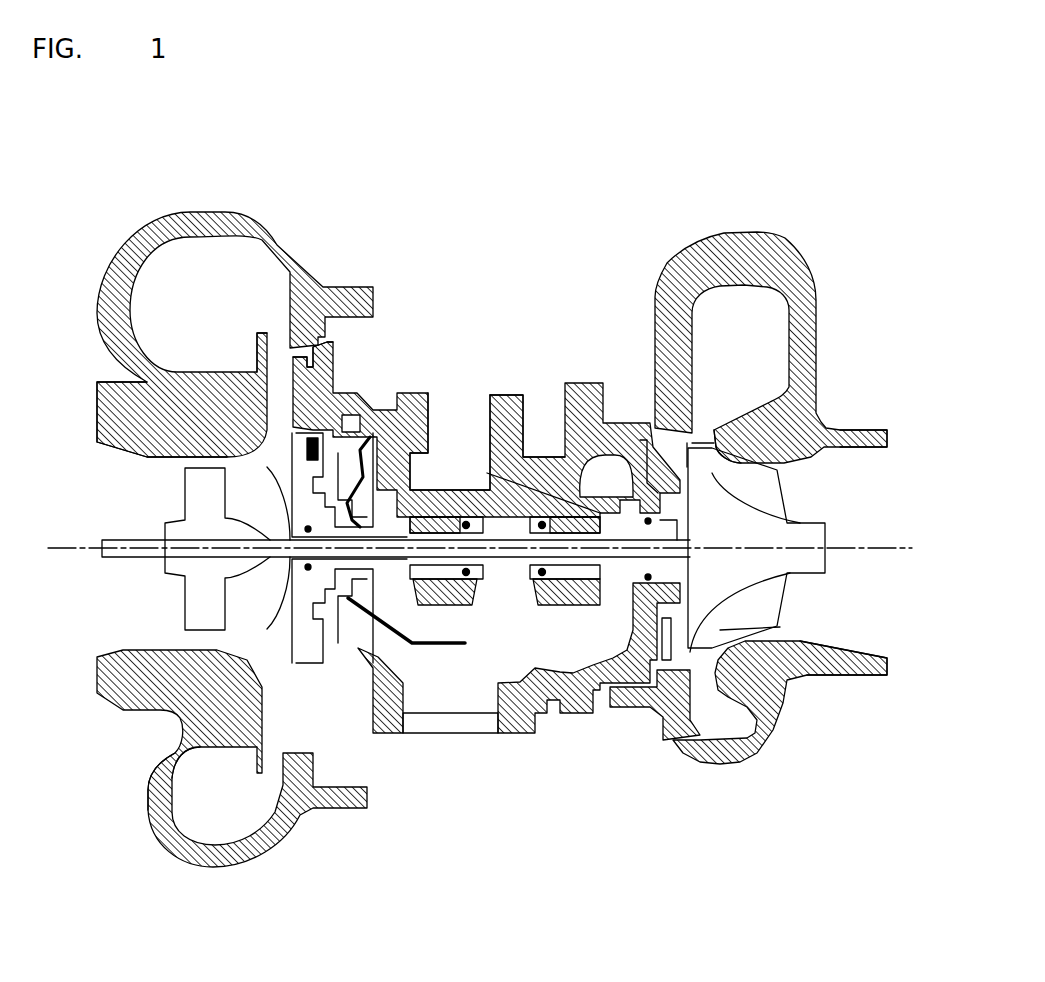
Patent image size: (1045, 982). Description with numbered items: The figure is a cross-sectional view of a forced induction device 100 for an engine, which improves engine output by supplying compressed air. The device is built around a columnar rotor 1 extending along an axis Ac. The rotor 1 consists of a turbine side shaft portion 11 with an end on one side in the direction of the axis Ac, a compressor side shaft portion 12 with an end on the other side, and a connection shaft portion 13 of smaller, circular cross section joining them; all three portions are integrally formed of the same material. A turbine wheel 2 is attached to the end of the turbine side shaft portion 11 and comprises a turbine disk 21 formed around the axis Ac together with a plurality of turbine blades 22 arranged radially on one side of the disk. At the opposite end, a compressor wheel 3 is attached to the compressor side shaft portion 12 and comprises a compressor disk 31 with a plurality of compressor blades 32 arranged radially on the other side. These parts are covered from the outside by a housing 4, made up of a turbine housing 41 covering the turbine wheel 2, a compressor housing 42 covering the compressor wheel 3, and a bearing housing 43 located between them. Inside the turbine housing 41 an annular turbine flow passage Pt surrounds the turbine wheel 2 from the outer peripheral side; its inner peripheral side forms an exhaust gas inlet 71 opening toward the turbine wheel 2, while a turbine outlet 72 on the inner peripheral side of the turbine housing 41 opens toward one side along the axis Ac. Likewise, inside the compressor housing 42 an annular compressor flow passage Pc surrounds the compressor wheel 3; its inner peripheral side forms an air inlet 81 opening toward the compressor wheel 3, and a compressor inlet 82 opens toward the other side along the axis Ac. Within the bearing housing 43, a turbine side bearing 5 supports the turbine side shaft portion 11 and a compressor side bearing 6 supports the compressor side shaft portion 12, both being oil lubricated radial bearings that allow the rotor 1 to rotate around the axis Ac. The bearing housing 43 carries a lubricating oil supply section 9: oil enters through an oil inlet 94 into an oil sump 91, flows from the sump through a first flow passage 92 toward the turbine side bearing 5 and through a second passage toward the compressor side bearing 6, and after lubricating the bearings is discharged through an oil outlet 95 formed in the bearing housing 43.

The forced induction device 100 is at (805, 162).
The rotor 1 is at (92, 605).
The turbine wheel 2 is at (117, 707).
The turbine disk 21 is at (253, 717).
The turbine blades 22 is at (190, 775).
The compressor wheel 3 is at (840, 600).
The compressor disk 31 is at (707, 620).
The compressor blades 32 is at (797, 680).
The housing 4 is at (600, 238).
The turbine housing 41 is at (150, 222).
The compressor housing 42 is at (733, 232).
The bearing housing 43 is at (503, 430).
The turbine side bearing 5 is at (457, 607).
The compressor side bearing 6 is at (640, 713).
The exhaust gas inlet 71 is at (262, 333).
The turbine outlet 72 is at (122, 447).
The air inlet 81 is at (703, 427).
The compressor inlet 82 is at (853, 467).
The lubricating oil supply section 9 is at (438, 238).
The oil sump 91 is at (462, 430).
The first flow passage 92 is at (578, 690).
The oil inlet 94 is at (437, 380).
The oil outlet 95 is at (400, 715).
The turbine side shaft portion 11 is at (314, 367).
The compressor side shaft portion 12 is at (618, 395).
The connection shaft portion 13 is at (520, 605).
The turbine flow passage Pt is at (207, 282).
The compressor flow passage Pc is at (752, 313).
The axis Ac is at (862, 547).